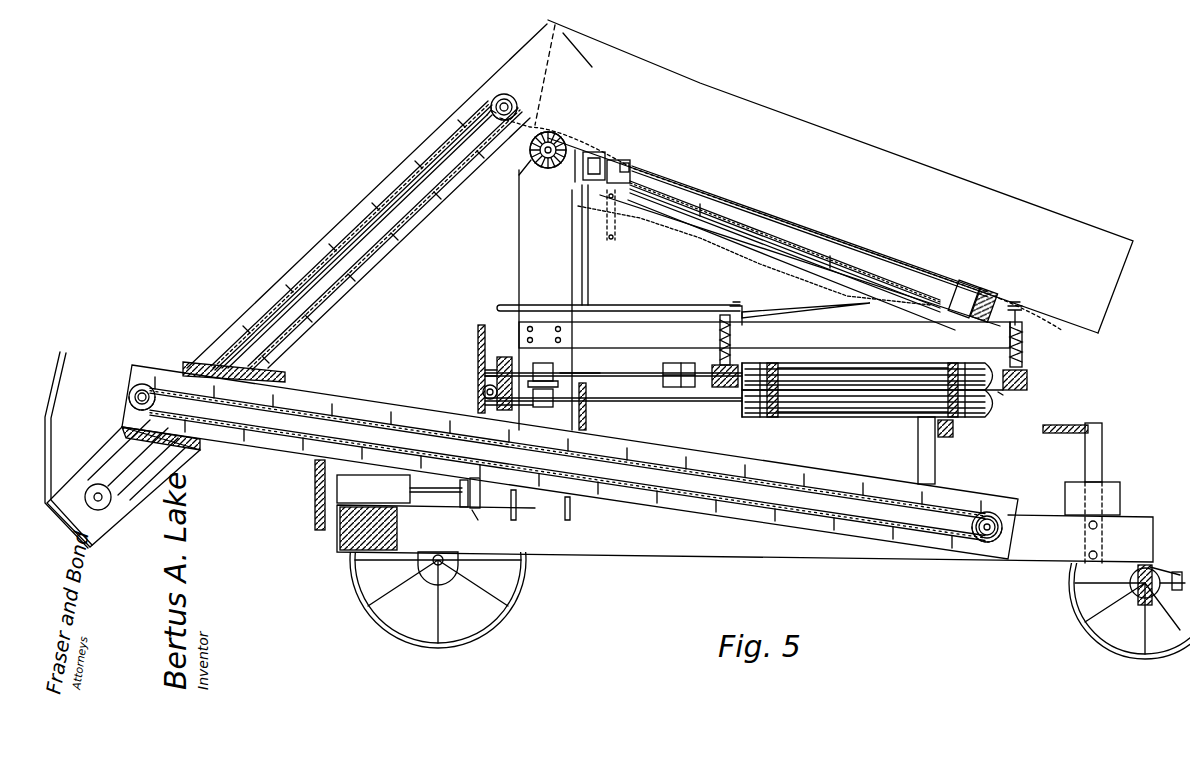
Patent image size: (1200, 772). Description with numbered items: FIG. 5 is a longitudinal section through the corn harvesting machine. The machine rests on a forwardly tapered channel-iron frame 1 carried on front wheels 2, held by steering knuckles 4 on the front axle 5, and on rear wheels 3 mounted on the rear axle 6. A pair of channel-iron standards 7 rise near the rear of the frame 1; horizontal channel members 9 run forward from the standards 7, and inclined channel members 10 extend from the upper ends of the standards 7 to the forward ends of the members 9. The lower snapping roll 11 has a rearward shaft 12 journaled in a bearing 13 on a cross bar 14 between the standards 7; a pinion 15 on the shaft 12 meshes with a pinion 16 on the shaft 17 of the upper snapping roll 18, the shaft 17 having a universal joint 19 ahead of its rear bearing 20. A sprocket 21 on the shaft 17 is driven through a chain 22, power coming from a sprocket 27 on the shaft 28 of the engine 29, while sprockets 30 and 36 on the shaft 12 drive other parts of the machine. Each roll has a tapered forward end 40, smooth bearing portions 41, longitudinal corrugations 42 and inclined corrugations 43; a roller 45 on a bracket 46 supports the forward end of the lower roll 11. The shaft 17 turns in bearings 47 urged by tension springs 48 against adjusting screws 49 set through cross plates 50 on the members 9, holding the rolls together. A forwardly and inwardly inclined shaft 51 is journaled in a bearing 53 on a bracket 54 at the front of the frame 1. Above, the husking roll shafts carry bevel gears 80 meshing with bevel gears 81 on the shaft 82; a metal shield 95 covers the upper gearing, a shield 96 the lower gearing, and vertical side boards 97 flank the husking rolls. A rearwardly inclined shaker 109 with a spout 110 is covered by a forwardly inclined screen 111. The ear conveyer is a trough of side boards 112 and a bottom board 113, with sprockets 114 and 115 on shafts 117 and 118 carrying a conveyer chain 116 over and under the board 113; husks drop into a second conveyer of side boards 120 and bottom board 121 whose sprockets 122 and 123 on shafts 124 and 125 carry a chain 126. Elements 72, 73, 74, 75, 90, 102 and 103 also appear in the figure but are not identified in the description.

The frame 1 is at (645, 548).
The front wheels 2 is at (1085, 612).
The rear wheels 3 is at (524, 600).
The steering knuckles 4 is at (1130, 586).
The front axle 5 is at (1136, 600).
The rear axle 6 is at (442, 572).
The standards 7 is at (519, 237).
The horizontal channel members 9 is at (764, 335).
The inclined channel members 10 is at (912, 300).
The lower snapping roll 11 is at (818, 406).
The shaft 12 is at (652, 405).
The bearing 13 is at (548, 408).
The cross bar 14 is at (584, 372).
The pinion 15 is at (500, 405).
The pinion 16 is at (505, 357).
The shaft 17 is at (640, 373).
The upper snapping roll 18 is at (795, 363).
The universal joint 19 is at (676, 363).
The rear bearing 20 is at (543, 363).
The sprocket 21 is at (478, 328).
The chain 22 is at (478, 378).
The sprocket 27 is at (480, 495).
The shaft 28 is at (445, 492).
The engine 29 is at (362, 495).
The sprocket 30 is at (483, 395).
The sprocket 36 is at (586, 402).
The tapered forward end 40 is at (1003, 394).
The smooth bearing portion 41 is at (951, 363).
The longitudinal corrugations 42 is at (906, 367).
The inclined corrugations 43 is at (968, 363).
The roller 45 is at (942, 440).
The bracket 46 is at (953, 429).
The bearings 47 is at (1027, 381).
The tension springs 48 is at (1022, 342).
The adjusting screws 49 is at (1028, 308).
The cross plates 50 is at (1025, 318).
The inclined shaft 51 is at (1072, 424).
The bearing 53 is at (1100, 426).
The bracket 54 is at (1102, 462).
The guide 72 is at (620, 162).
The roller block 73 is at (968, 290).
The upper conveyor 74 is at (865, 262).
The roller block 75 is at (604, 162).
The bevel gear 80 is at (560, 147).
The bevel gear 81 is at (540, 170).
The shaft 82 is at (518, 172).
The block 90 is at (988, 293).
The metal shield 95 is at (600, 138).
The shield 96 is at (1005, 298).
The side boards 97 is at (888, 158).
The sprocket 102 is at (480, 521).
The sprocket 103 is at (463, 507).
The shaker 109 is at (614, 310).
The spout 110 is at (514, 302).
The screen 111 is at (716, 250).
The side boards 112 is at (838, 476).
The bottom board 113 is at (775, 474).
The sprocket 114 is at (146, 390).
The sprocket 115 is at (984, 533).
The conveyer chain 116 is at (832, 530).
The shaft 117 is at (136, 390).
The shaft 118 is at (990, 533).
The side boards 120 is at (358, 215).
The bottom board 121 is at (410, 182).
The upper sprocket 122 is at (505, 103).
The lower sprocket 123 is at (118, 508).
The shaft 124 is at (500, 102).
The shaft 125 is at (100, 504).
The conveyer chain 126 is at (306, 262).